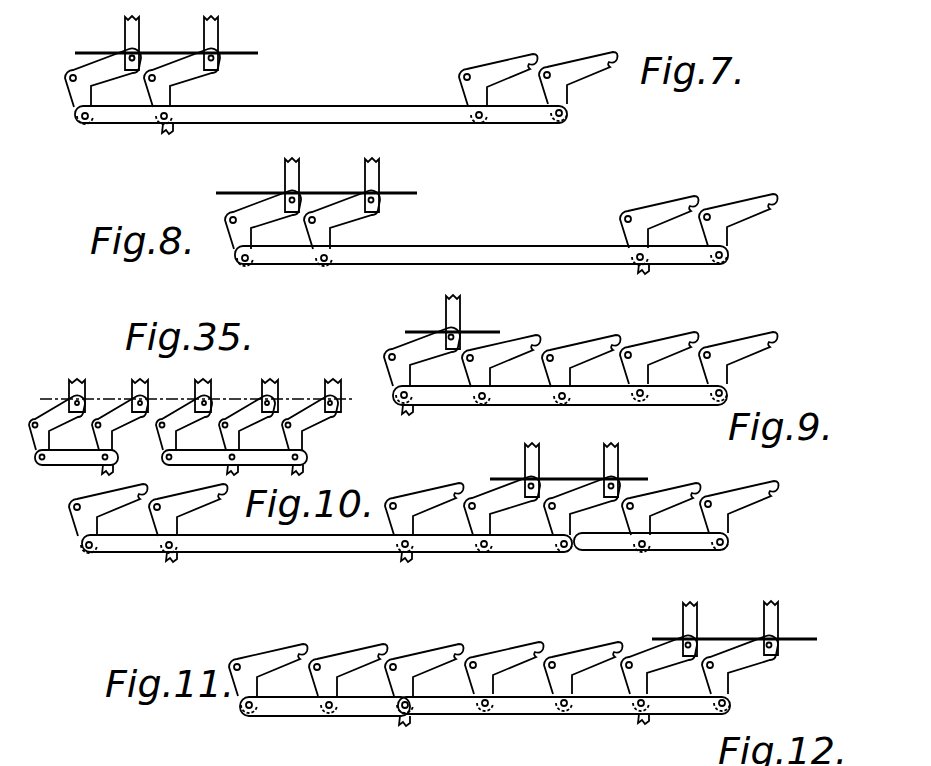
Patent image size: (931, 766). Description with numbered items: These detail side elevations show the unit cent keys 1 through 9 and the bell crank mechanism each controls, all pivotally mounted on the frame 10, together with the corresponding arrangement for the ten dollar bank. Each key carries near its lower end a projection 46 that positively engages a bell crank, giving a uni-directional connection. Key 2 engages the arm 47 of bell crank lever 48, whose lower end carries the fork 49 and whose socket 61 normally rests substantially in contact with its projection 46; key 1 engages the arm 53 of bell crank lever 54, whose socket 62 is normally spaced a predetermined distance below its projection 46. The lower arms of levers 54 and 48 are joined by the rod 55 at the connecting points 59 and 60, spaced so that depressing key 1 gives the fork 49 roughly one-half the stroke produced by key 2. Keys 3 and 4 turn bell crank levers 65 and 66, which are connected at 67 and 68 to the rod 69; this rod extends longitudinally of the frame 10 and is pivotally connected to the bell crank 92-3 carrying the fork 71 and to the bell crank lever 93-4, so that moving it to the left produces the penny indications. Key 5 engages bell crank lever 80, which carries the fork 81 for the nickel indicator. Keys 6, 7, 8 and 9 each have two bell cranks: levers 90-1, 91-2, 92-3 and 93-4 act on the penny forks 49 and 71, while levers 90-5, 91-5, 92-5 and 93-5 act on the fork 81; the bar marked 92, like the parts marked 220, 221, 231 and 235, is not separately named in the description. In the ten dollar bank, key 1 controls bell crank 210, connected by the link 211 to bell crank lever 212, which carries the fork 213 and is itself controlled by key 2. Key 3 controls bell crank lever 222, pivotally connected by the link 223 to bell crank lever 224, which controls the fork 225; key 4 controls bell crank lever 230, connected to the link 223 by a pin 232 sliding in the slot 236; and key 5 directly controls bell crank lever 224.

In FIG. 7, the key 1 is at (149, 88).
In FIG. 35, the key 1 is at (77, 395).
In FIG. 7, the key 2 is at (231, 52).
In FIG. 35, the key 2 is at (140, 395).
In FIG. 8, the key 3 is at (290, 185).
In FIG. 35, the key 3 is at (203, 395).
In FIG. 8, the key 4 is at (403, 178).
In FIG. 35, the key 4 is at (82, 358).
In FIG. 35, the key 5 is at (333, 395).
In FIG. 9, the key 5 is at (452, 322).
In FIG. 10, the key 6 is at (531, 470).
In FIG. 10, the key 7 is at (610, 470).
In FIG. 11, the key 8 is at (689, 629).
In FIG. 11, the key 9 is at (770, 628).
In FIG. 7, the frame 10 is at (257, 50).
In FIG. 8, the frame 10 is at (417, 193).
In FIG. 7, the projection 46 is at (137, 53).
In FIG. 7, the arm 47 is at (183, 97).
In FIG. 7, the bell crank lever 48 is at (183, 111).
In FIG. 7, the fork 49 is at (177, 133).
In FIG. 7, the arm 53 is at (101, 71).
In FIG. 7, the bell crank lever 54 is at (87, 45).
In FIG. 7, the rod 55 is at (320, 118).
In FIG. 7, the connecting point 59 is at (83, 122).
In FIG. 7, the connecting point 60 is at (147, 130).
In FIG. 7, the socket 61 is at (217, 62).
In FIG. 7, the socket 62 is at (149, 88).
In FIG. 8, the bell crank lever 65 is at (242, 252).
In FIG. 8, the bell crank lever 66 is at (342, 248).
In FIG. 8, the connection 67 is at (237, 268).
In FIG. 8, the connection 68 is at (320, 263).
In FIG. 8, the rod 69 is at (481, 241).
In FIG. 11, the rod 69 is at (325, 694).
In FIG. 8, the fork 71 is at (643, 273).
In FIG. 9, the bell crank lever 80 is at (412, 352).
In FIG. 9, the fork 81 is at (407, 415).
In FIG. 10, the fork 81 is at (410, 562).
In FIG. 11, the fork 81 is at (413, 720).
In FIG. 9, the connecting bar 92 is at (560, 408).
In FIG. 10, the connecting bar 92 is at (592, 553).
In FIG. 11, the connecting bar 92 is at (495, 688).
In FIG. 7, the bell crank lever 90-1 is at (498, 78).
In FIG. 10, the bell crank lever 90-1 is at (502, 514).
In FIG. 7, the bell crank lever 91-2 is at (578, 76).
In FIG. 8, the bell crank 92-3 is at (659, 222).
In FIG. 11, the bell crank 92-3 is at (659, 673).
In FIG. 8, the bell crank lever 93-4 is at (738, 219).
In FIG. 11, the bell crank lever 93-4 is at (741, 673).
In FIG. 9, the bell crank lever 90-5 is at (501, 369).
In FIG. 9, the bell crank lever 91-5 is at (581, 369).
In FIG. 10, the bell crank lever 91-5 is at (582, 514).
In FIG. 9, the bell crank lever 92-5 is at (659, 356).
In FIG. 10, the bell crank lever 92-5 is at (661, 517).
In FIG. 9, the bell crank lever 93-5 is at (735, 343).
In FIG. 10, the bell crank lever 93-5 is at (739, 515).
In FIG. 35, the bell crank 210 is at (59, 415).
In FIG. 35, the link 211 is at (48, 392).
In FIG. 35, the bell crank lever 212 is at (120, 427).
In FIG. 35, the fork 213 is at (118, 475).
In FIG. 35, the connecting bar 220 is at (96, 471).
In FIG. 35, the bar end 221 is at (118, 457).
In FIG. 35, the bell crank lever 222 is at (185, 413).
In FIG. 35, the link 223 is at (240, 467).
In FIG. 35, the bell crank lever 224 is at (310, 417).
In FIG. 35, the fork 225 is at (346, 465).
In FIG. 35, the bell crank lever 230 is at (248, 415).
In FIG. 35, the hook 231 is at (306, 473).
In FIG. 35, the pin 232 is at (240, 390).
In FIG. 35, the connecting bar 235 is at (234, 468).
In FIG. 35, the slot 236 is at (177, 387).